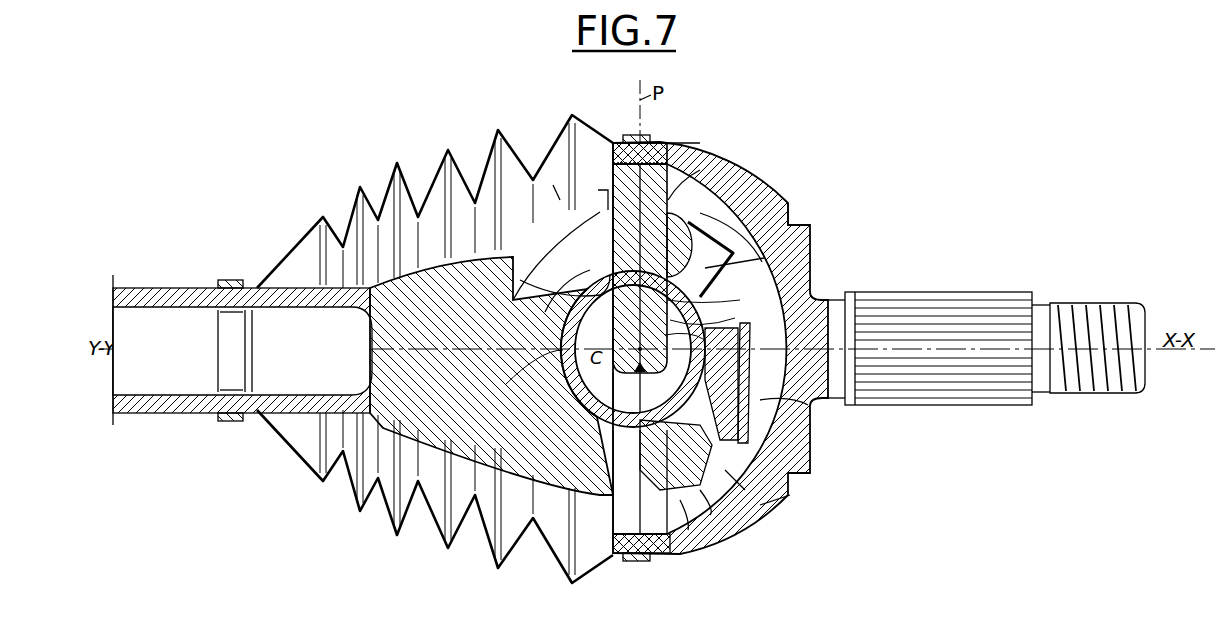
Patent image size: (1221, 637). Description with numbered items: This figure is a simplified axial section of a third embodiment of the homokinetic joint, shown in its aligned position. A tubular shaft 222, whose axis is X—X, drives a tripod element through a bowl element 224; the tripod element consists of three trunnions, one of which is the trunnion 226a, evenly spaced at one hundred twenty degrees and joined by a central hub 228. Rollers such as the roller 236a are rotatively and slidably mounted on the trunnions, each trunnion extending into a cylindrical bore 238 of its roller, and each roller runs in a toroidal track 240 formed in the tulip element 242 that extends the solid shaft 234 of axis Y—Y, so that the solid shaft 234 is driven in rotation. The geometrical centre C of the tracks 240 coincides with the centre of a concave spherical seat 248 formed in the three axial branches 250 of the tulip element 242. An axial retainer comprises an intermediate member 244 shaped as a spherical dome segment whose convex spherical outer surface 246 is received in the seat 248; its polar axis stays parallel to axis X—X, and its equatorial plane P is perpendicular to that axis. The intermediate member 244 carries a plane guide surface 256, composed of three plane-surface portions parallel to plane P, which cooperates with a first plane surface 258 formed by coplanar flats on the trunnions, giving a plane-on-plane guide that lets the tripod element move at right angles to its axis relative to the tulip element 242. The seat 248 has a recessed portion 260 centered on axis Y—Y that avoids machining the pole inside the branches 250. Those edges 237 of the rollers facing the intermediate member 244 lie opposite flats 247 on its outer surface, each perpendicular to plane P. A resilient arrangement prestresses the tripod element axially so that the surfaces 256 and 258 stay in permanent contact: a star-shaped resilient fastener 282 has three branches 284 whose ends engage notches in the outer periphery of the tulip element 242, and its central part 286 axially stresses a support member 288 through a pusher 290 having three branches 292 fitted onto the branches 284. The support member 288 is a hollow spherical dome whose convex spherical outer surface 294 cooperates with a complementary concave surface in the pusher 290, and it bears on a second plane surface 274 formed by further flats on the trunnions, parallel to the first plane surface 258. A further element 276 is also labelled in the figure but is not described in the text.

The tubular shaft 222 is at (979, 290).
The bowl element 224 is at (757, 188).
The trunnion 226a is at (699, 172).
The central hub 228 is at (700, 295).
The solid shaft 234 is at (206, 285).
The roller 236a is at (583, 180).
The edges of the rollers 237 is at (790, 205).
The cylindrical bore 238 is at (677, 204).
The toroidal tracks 240 is at (812, 246).
The tulip element 242 is at (476, 391).
The intermediate member 244 is at (592, 414).
The convex spherical outer surface 246 is at (546, 313).
The flat 247 is at (553, 185).
The concave spherical seat 248 is at (627, 553).
The axial branches 250 is at (643, 463).
The plane guide surface 256 is at (540, 232).
The first plane surface 258 is at (600, 309).
The recessed portion 260 is at (563, 362).
The second plane surface 274 is at (690, 312).
The pivot 276 is at (682, 349).
The star-shaped resilient fastener 282 is at (737, 480).
The branches of the fastener 284 is at (710, 515).
The central part of the fastener 286 is at (748, 352).
The support member 288 is at (702, 403).
The pusher 290 is at (790, 405).
The branches of the pusher 292 is at (778, 503).
The convex spherical outer surface of the support member 294 is at (688, 500).